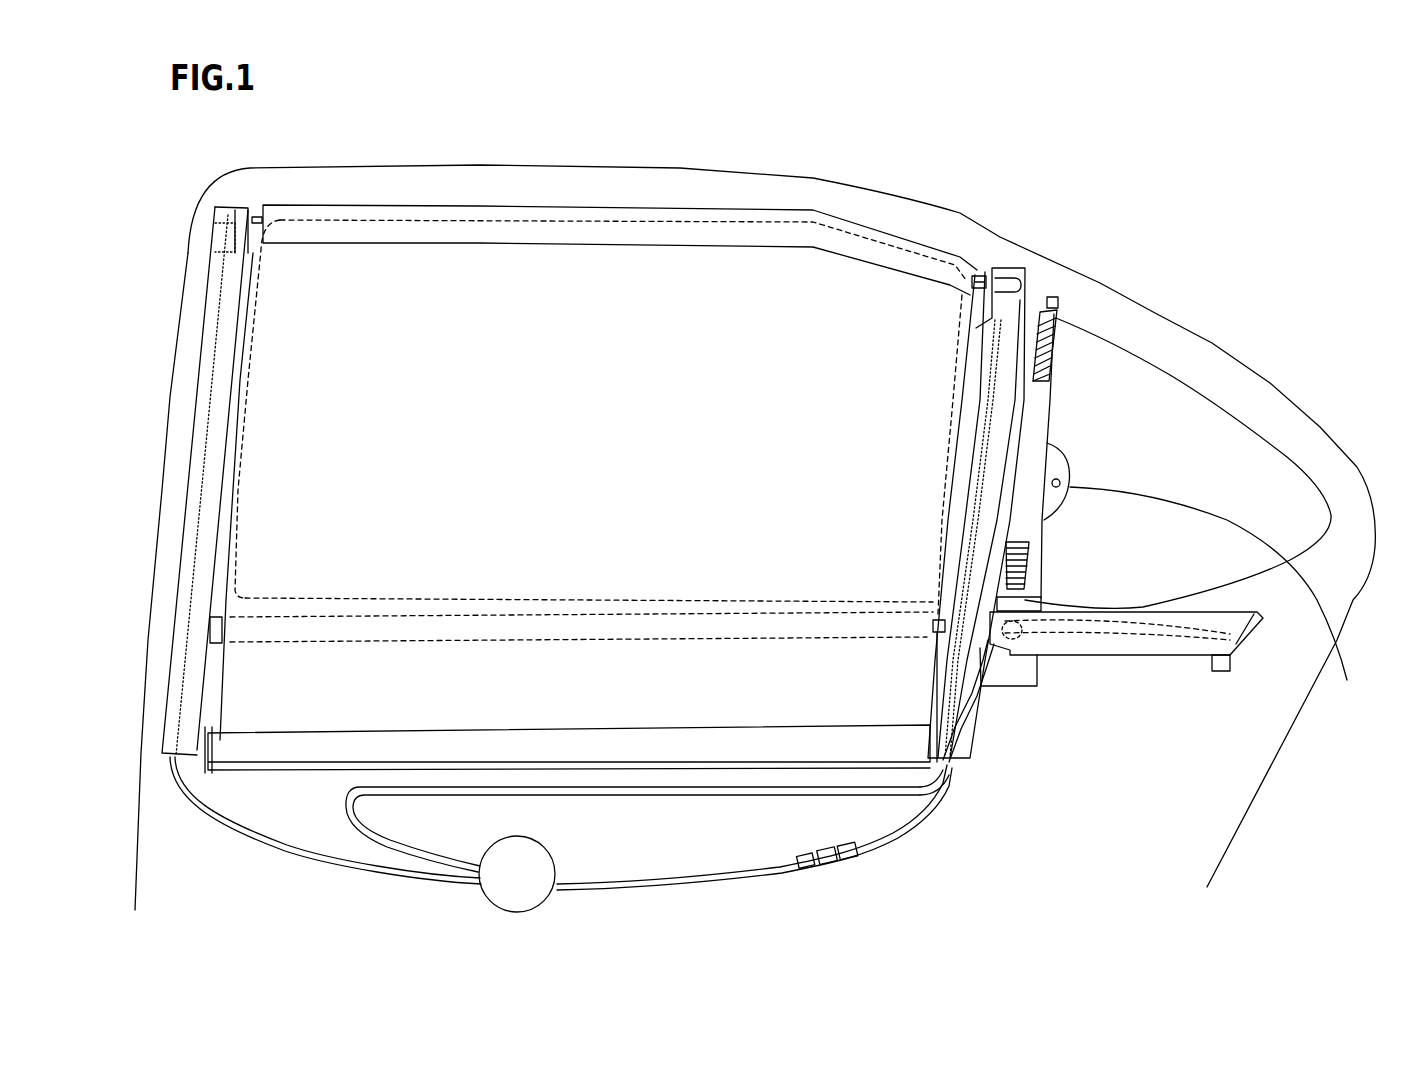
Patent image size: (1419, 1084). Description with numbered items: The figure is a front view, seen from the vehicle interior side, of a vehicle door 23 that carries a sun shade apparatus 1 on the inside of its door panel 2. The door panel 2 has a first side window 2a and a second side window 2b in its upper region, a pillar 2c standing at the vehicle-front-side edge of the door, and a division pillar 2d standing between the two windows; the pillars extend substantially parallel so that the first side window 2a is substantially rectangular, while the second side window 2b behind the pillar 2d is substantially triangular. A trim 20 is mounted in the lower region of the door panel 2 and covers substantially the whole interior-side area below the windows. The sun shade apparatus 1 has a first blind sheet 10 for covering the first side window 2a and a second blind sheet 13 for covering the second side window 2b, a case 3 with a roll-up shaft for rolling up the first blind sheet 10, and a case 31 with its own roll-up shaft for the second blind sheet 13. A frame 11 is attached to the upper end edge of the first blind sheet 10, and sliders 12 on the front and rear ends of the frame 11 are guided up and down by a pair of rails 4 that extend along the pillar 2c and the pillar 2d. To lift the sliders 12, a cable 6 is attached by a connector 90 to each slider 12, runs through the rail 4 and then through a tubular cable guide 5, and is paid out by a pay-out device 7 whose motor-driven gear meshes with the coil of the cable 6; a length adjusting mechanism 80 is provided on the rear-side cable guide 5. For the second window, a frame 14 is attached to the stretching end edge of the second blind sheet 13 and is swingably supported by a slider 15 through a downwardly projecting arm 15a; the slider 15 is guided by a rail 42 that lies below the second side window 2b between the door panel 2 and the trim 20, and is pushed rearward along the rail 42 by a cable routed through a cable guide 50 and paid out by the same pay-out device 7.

The sun shade apparatus 1 is at (365, 882).
The door panel 2 is at (150, 775).
The first side window 2a is at (577, 217).
The second side window 2b is at (1220, 443).
The pillar 2c is at (182, 376).
The pillar (division frame) 2d is at (1060, 350).
The case 3 is at (237, 753).
The rail 4 is at (192, 463).
The cable guide (outer tube) 5 is at (230, 840).
The cable 6 is at (193, 545).
The pay-out device 7 is at (467, 886).
The first blind sheet (curtain) 10 is at (513, 285).
The frame 11 is at (408, 205).
The slider 12 is at (258, 215).
The second blind sheet (curtain) 13 is at (1040, 408).
The frame 14 is at (1214, 600).
The slider 15 is at (1043, 652).
The arm 15a is at (1050, 557).
The trim 20 is at (295, 901).
The vehicle door 23 is at (190, 200).
The case 31 is at (1058, 295).
The rail 42 is at (1107, 637).
The cable guide 50 is at (700, 790).
The length adjusting mechanism 80 is at (840, 860).
The connector 90 is at (222, 237).